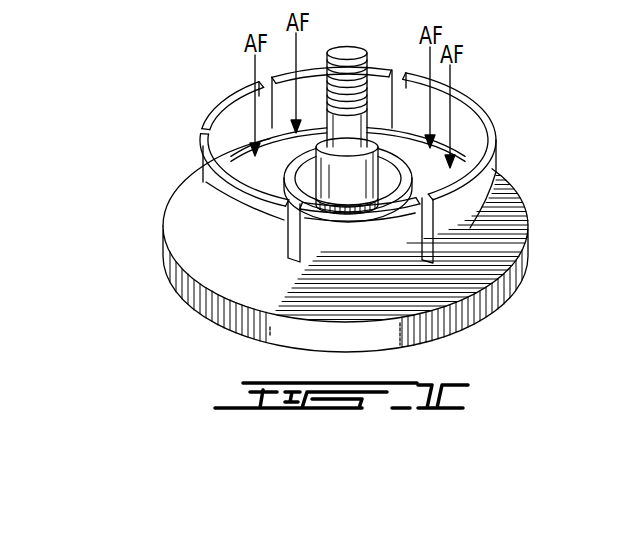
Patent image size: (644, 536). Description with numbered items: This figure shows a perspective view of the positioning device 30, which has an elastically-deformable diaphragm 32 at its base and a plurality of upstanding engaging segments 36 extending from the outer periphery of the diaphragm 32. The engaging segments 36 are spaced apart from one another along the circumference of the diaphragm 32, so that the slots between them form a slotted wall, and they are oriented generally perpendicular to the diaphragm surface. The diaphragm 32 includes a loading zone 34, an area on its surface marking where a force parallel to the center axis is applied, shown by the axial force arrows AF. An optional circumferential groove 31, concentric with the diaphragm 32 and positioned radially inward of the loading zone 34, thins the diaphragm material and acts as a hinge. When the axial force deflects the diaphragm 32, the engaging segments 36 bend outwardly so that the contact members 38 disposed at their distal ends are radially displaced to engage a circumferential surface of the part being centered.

The positioning device 30 is at (477, 242).
The circumferential groove 31 is at (400, 188).
The diaphragm 32 is at (204, 155).
The loading zone 34 is at (480, 212).
The engaging segments 36 is at (493, 132).
The contact members 38 is at (448, 207).